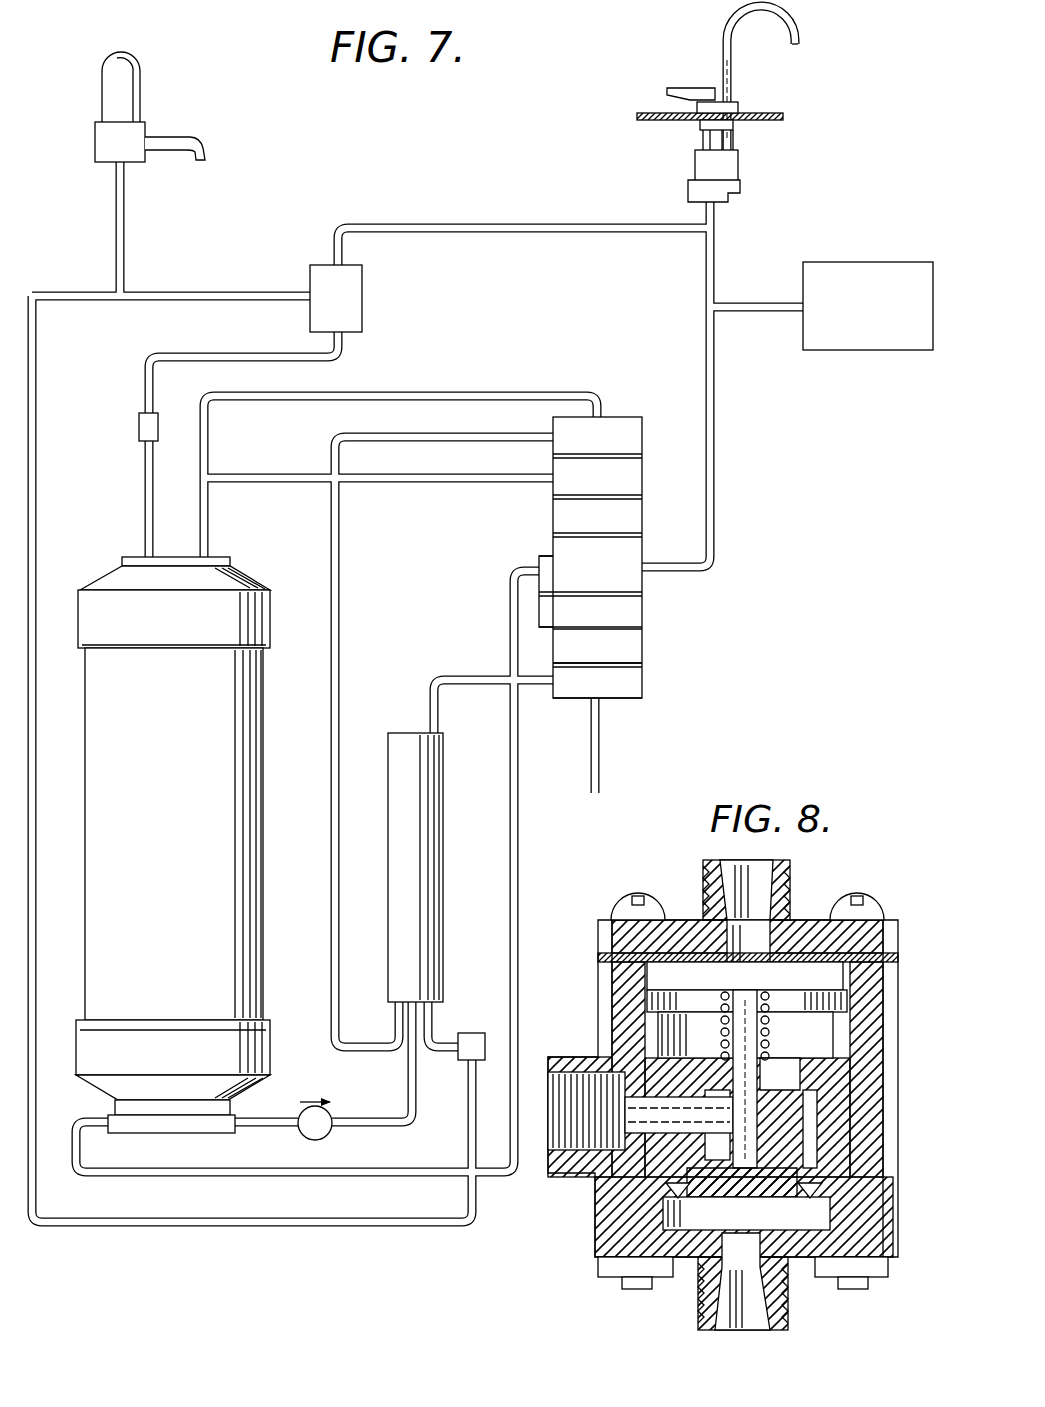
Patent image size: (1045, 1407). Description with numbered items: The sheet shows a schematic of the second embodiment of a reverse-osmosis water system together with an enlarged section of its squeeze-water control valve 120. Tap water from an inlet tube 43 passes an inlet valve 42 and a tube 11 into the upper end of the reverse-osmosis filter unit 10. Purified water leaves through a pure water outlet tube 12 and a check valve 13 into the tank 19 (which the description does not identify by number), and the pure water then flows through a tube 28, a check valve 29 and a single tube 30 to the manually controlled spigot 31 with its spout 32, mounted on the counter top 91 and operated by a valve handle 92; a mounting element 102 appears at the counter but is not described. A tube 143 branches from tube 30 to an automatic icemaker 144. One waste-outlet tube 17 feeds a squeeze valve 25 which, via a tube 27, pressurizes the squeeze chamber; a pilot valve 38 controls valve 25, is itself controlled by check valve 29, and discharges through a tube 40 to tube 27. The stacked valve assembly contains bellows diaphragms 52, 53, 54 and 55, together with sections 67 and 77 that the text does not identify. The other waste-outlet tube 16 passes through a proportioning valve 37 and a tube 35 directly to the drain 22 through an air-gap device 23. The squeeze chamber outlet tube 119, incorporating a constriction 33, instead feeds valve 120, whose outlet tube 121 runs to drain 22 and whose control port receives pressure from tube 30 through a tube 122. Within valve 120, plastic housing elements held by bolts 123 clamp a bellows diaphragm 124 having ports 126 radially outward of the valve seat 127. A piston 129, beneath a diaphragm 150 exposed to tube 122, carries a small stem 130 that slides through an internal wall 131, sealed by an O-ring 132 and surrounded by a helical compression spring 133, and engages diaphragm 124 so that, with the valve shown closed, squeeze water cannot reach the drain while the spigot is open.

In FIG. 7, the reverse-osmosis filter unit 10 is at (443, 865).
In FIG. 7, the tube 11 is at (475, 675).
In FIG. 7, the pure water outlet tube 12 is at (395, 1128).
In FIG. 7, the check valve 13 is at (320, 1140).
In FIG. 7, the waste-outlet tube 16 is at (435, 1020).
In FIG. 7, the waste-outlet tube 17 is at (335, 440).
In FIG. 7, the storage tank 19 is at (262, 790).
In FIG. 7, the drain 22 is at (207, 158).
In FIG. 7, the air-gap device 23 is at (137, 95).
In FIG. 7, the squeeze valve 25 is at (645, 437).
In FIG. 7, the tube 27 is at (447, 375).
In FIG. 7, the tube 28 is at (517, 800).
In FIG. 7, the check valve 29 is at (650, 603).
In FIG. 7, the tube 30 is at (715, 445).
In FIG. 7, the spigot 31 is at (740, 168).
In FIG. 7, the spout 32 is at (795, 40).
In FIG. 7, the constrictor 33 is at (139, 427).
In FIG. 7, the tube 35 is at (62, 508).
In FIG. 7, the proportioning valve 37 is at (465, 1062).
In FIG. 7, the pilot valve 38 is at (600, 557).
In FIG. 7, the tube 40 is at (375, 478).
In FIG. 7, the inlet valve 42 is at (650, 665).
In FIG. 7, the inlet tube 43 is at (598, 753).
In FIG. 7, the diaphragm 52 is at (645, 457).
In FIG. 7, the diaphragm 53 is at (645, 497).
In FIG. 7, the diaphragm 54 is at (645, 594).
In FIG. 7, the fourth diaphragm 55 is at (640, 670).
In FIG. 7, the valve port 67 is at (645, 535).
In FIG. 7, the valve port 77 is at (645, 628).
In FIG. 7, the counter top 91 is at (645, 120).
In FIG. 7, the valve handle 92 is at (688, 87).
In FIG. 7, the mounting nut 102 is at (693, 125).
In FIG. 7, the tube 119 is at (252, 340).
In FIG. 8, the tube 119 is at (700, 1325).
In FIG. 7, the valve 120 is at (372, 298).
In FIG. 8, the valve 120 is at (665, 890).
In FIG. 7, the tube 121 is at (250, 294).
In FIG. 8, the tube 121 is at (585, 1044).
In FIG. 7, the tube 122 is at (535, 204).
In FIG. 8, the tube 122 is at (790, 885).
In FIG. 8, the bolts 123 is at (622, 915).
In FIG. 8, the diaphragm 124 is at (775, 1205).
In FIG. 8, the ports 126 is at (668, 1200).
In FIG. 8, the valve seat 127 is at (742, 1182).
In FIG. 8, the piston 129 is at (650, 980).
In FIG. 8, the stem 130 is at (735, 1120).
In FIG. 8, the internal wall 131 is at (770, 1055).
In FIG. 8, the O-ring 132 is at (718, 1062).
In FIG. 8, the helical compression spring 133 is at (718, 993).
In FIG. 7, the tube 143 is at (770, 305).
In FIG. 7, the automatic icemaker 144 is at (855, 262).
In FIG. 8, the diaphragm 150 is at (600, 958).